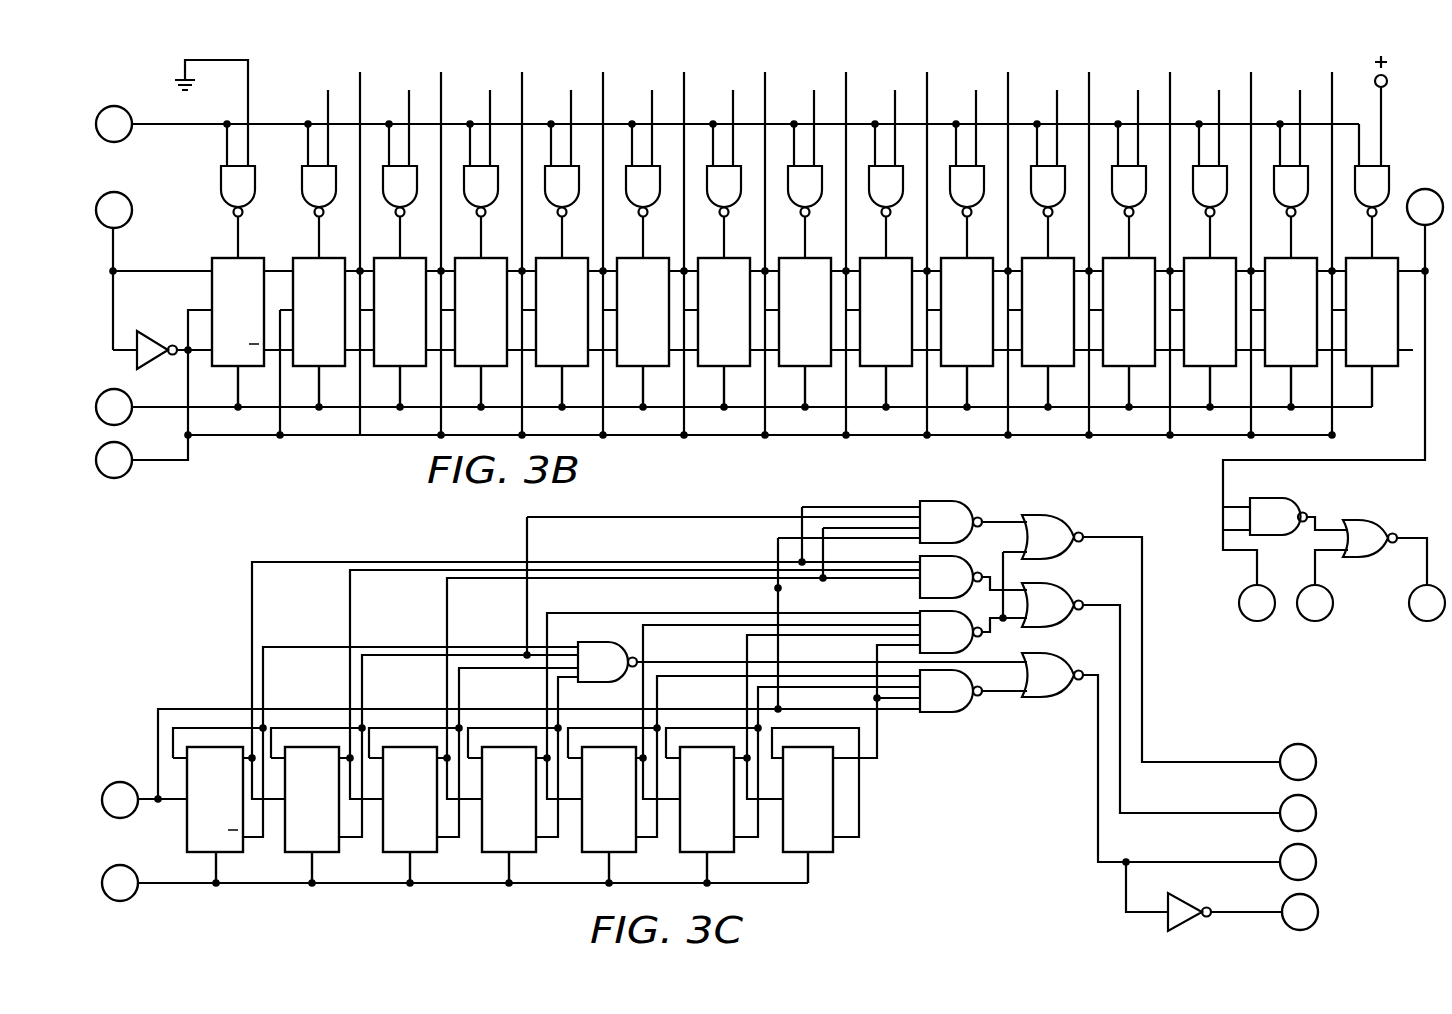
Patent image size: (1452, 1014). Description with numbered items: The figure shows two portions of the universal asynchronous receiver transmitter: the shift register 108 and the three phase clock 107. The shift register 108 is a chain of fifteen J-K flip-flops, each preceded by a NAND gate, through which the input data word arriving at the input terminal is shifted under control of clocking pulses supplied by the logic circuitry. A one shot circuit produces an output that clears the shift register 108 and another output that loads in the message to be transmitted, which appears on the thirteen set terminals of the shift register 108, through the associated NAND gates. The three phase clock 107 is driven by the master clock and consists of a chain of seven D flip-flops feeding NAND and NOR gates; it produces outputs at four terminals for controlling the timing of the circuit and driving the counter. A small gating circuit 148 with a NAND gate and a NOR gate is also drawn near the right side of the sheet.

In FIG. 3B, the shift register 108 is at (1397, 124).
In FIG. 3B, the output gating circuit 148 is at (1370, 498).
In FIG. 3C, the three phase clock 107 is at (980, 798).